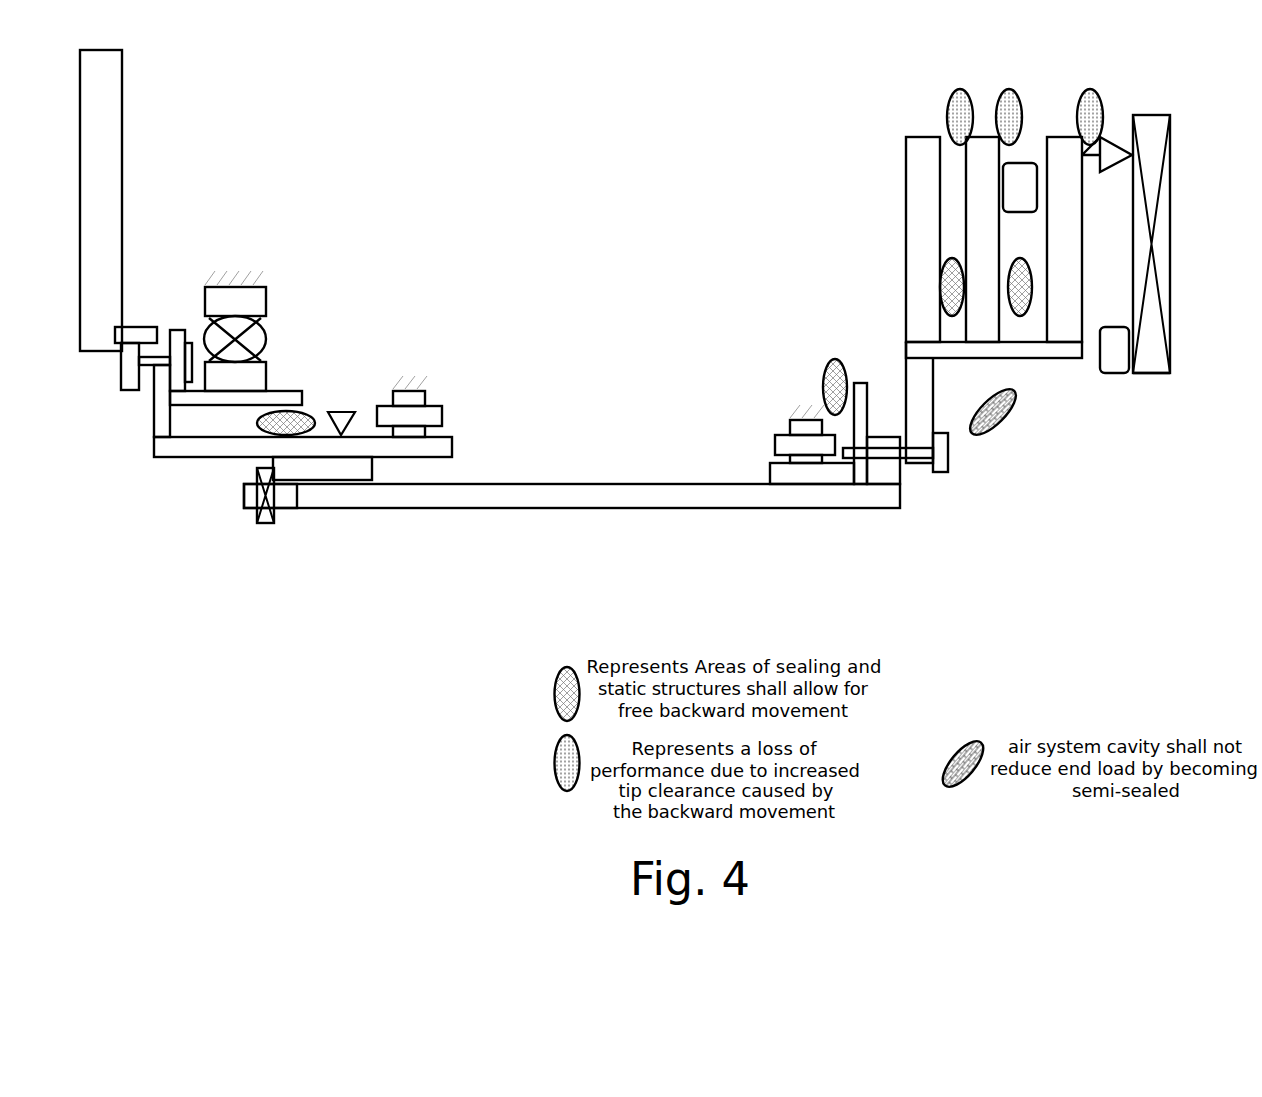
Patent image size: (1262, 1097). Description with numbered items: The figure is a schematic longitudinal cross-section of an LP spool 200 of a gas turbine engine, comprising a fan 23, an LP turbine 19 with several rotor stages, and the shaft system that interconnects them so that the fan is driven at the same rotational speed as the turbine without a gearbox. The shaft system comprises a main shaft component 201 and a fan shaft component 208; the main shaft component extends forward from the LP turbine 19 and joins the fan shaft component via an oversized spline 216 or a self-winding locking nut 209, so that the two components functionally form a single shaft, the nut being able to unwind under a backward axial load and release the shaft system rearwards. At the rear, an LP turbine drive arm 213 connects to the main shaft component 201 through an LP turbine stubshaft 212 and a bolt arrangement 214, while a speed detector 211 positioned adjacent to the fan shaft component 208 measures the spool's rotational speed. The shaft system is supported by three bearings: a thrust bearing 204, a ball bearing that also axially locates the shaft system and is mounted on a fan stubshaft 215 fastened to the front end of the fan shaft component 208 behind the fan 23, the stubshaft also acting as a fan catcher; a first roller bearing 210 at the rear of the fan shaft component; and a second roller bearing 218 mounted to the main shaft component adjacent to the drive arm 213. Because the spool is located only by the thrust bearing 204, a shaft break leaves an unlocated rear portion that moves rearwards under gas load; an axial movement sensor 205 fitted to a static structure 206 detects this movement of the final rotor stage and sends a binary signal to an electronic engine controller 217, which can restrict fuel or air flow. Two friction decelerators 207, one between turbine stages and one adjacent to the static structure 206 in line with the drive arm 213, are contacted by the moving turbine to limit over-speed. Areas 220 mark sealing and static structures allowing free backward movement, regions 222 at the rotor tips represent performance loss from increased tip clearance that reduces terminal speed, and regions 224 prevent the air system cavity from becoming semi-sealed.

The LP turbine 19 is at (928, 137).
The fan 23 is at (122, 70).
The LP spool 200 is at (500, 108).
The main shaft component 201 is at (588, 510).
The thrust bearing 204 is at (237, 303).
The axial movement sensor 205 is at (1118, 138).
The static structure 206 is at (1155, 375).
The friction decelerators 207 is at (1022, 163).
The fan shaft component 208 is at (160, 440).
The self-winding locking nut 209 is at (270, 525).
The first roller bearing 210 is at (408, 388).
The speed detector 211 is at (343, 410).
The LP turbine stubshaft 212 is at (860, 383).
The LP turbine drive arm 213 is at (926, 466).
The bolt arrangement 214 is at (949, 464).
The fan stubshaft 215 is at (177, 345).
The oversized spline 216 is at (287, 488).
The electronic engine controller 217 is at (1114, 147).
The second roller bearing 218 is at (803, 405).
The areas of sealing and static structures 220 is at (566, 668).
The regions of performance loss 222 is at (567, 791).
The air system cavity regions 224 is at (962, 790).